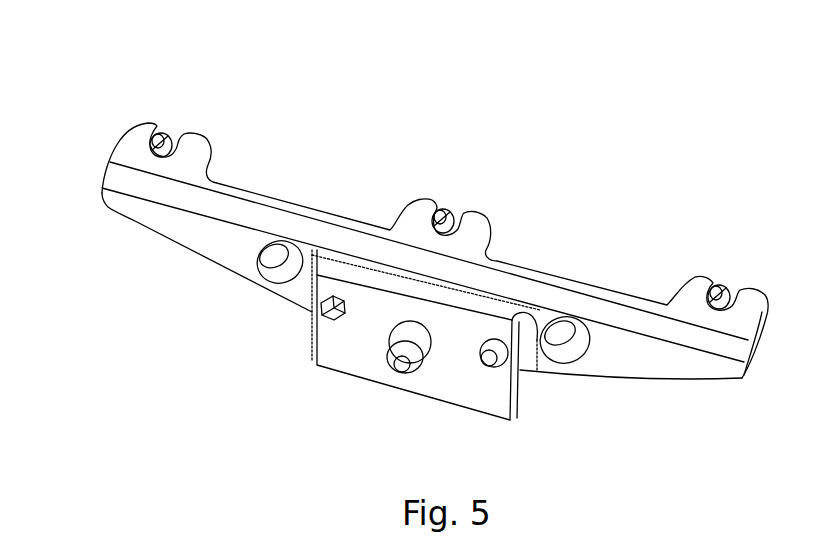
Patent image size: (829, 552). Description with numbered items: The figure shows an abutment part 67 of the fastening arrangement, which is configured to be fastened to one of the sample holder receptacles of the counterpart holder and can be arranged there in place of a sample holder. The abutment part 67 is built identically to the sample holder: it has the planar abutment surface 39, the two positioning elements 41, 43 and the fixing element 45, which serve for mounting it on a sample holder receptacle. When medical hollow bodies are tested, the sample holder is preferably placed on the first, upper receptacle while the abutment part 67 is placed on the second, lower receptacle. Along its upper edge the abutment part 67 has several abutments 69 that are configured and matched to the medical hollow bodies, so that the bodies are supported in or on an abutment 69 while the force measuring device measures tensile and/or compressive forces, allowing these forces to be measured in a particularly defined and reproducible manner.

The abutment part 67 is at (617, 160).
The abutment 69 is at (163, 131).
The planar abutment surface 39 is at (488, 402).
The positioning element 41 is at (505, 358).
The positioning element 43 is at (320, 318).
The fixing element 45 is at (410, 362).